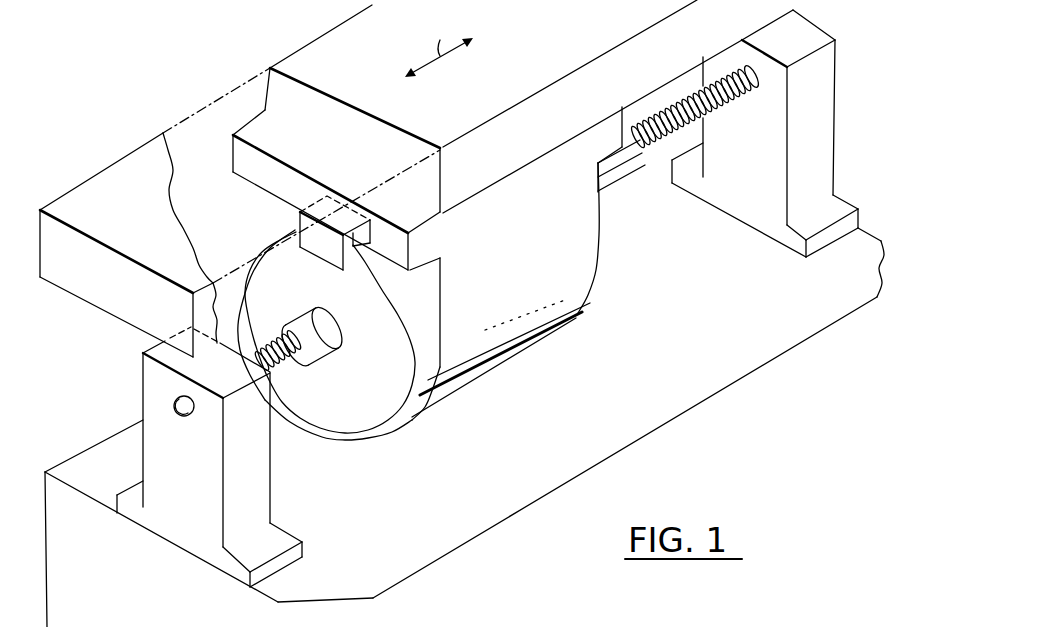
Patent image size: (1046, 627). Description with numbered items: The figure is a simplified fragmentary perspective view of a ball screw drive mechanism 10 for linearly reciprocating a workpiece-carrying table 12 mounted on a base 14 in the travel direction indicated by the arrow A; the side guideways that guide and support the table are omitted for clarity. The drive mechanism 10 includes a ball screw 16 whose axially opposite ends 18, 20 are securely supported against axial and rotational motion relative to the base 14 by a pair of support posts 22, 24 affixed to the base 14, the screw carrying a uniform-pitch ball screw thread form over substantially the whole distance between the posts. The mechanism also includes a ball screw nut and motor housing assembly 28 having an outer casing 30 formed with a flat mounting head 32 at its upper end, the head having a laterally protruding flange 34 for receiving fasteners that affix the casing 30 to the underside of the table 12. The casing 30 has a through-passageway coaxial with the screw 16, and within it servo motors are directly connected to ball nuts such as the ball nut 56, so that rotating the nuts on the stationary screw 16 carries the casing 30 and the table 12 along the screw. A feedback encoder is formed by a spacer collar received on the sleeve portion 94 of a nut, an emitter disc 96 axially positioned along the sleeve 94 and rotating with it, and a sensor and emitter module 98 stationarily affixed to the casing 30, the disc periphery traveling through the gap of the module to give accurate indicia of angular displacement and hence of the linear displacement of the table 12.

The ball screw drive mechanism 10 is at (466, 313).
The workpiece-carrying table 12 is at (122, 158).
The base 14 is at (464, 427).
The ball screw 16 is at (511, 222).
The ball screw end 18 is at (173, 410).
The ball screw end 20 is at (753, 91).
The support post 22 is at (190, 537).
The support post 24 is at (836, 133).
The ball screw nut and motor housing assembly 28 is at (517, 280).
The outer casing 30 is at (433, 410).
The flat mounting head 32 is at (437, 193).
The laterally protruding flange 34 is at (364, 352).
The ball nut 56 is at (620, 184).
The sleeve portion of nut 94 is at (333, 347).
The emitter disc 96 is at (360, 408).
The sensor and emitter module 98 is at (317, 251).